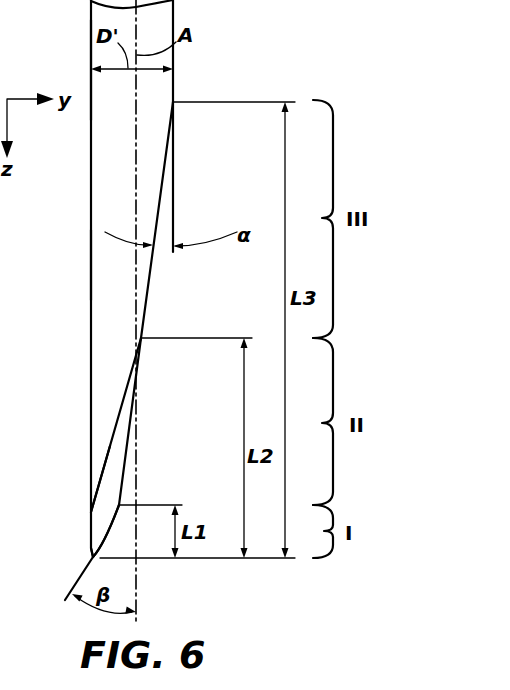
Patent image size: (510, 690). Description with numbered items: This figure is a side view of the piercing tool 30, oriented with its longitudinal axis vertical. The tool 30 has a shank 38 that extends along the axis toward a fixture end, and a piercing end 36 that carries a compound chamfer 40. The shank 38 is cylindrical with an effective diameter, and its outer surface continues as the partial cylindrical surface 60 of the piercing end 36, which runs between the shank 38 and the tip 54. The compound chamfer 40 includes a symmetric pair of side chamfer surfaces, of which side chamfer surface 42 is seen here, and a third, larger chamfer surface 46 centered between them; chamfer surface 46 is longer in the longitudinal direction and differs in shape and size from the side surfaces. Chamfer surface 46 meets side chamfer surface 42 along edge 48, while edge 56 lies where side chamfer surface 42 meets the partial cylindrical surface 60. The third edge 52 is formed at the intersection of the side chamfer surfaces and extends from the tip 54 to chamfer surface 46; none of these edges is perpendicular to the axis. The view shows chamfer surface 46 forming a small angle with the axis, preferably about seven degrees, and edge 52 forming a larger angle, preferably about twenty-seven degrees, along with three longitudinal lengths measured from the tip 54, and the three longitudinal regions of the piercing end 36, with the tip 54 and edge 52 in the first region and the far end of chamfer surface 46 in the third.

The piercing tool 30 is at (205, 68).
The piercing end 36 is at (210, 216).
The shank 38 is at (106, 60).
The compound chamfer 40 is at (127, 412).
The side chamfer surface 42 is at (117, 462).
The chamfer surface 46 is at (153, 277).
The edge 48 is at (130, 447).
The third edge 52 is at (113, 536).
The tip 54 is at (90, 560).
The edge 56 is at (100, 471).
The partial cylindrical surface 60 is at (108, 282).